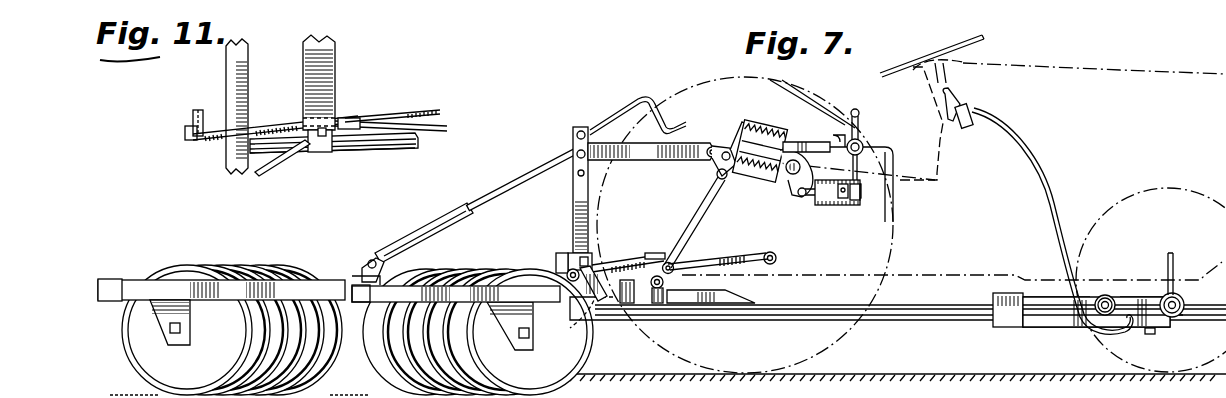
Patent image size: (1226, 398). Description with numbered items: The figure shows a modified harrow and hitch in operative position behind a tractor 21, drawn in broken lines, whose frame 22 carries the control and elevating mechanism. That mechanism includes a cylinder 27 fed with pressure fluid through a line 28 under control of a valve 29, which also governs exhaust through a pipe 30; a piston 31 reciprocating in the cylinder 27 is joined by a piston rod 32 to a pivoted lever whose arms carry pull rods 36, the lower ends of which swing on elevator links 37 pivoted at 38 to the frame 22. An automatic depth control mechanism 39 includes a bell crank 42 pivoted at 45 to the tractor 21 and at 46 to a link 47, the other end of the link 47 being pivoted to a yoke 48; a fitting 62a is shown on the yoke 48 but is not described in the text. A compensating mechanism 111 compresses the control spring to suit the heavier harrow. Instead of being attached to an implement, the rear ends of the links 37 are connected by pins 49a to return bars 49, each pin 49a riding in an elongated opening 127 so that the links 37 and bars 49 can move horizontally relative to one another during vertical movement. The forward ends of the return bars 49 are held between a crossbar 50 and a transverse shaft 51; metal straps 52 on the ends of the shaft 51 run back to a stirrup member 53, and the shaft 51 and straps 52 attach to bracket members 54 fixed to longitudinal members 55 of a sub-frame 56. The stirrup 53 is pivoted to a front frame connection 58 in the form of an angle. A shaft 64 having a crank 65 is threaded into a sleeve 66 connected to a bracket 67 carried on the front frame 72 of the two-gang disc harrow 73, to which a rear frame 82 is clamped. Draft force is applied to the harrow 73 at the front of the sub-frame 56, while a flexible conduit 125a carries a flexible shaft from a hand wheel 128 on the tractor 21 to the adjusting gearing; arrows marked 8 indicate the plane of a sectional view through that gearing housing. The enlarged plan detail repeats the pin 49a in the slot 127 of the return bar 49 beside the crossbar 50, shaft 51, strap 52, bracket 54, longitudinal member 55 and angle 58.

In FIG. 7, the section line 8- 8 is at (1010, 283).
In FIG. 7, the tractor 21 is at (1166, 62).
In FIG. 7, the frame 22 is at (930, 280).
In FIG. 7, the cylinder 27 is at (860, 198).
In FIG. 7, the line 28 is at (896, 186).
In FIG. 7, the valve 29 is at (866, 130).
In FIG. 7, the pipe 30 is at (836, 140).
In FIG. 7, the piston 31 is at (843, 203).
In FIG. 7, the piston rod 32 is at (803, 197).
In FIG. 11, the pull rod 36 is at (448, 128).
In FIG. 7, the pull rod 36 is at (696, 205).
In FIG. 11, the elevator link 37 is at (412, 110).
In FIG. 7, the elevator link 37 is at (722, 260).
In FIG. 7, the pivot 38 is at (776, 258).
In FIG. 7, the automatic depth control mechanism 39 is at (766, 188).
In FIG. 7, the bell crank 42 is at (722, 146).
In FIG. 7, the pivot 45 is at (728, 180).
In FIG. 7, the pivot 46 is at (722, 160).
In FIG. 7, the link 47 is at (640, 155).
In FIG. 7, the yoke 48 is at (565, 212).
In FIG. 11, the return bar 49 is at (268, 113).
In FIG. 7, the return bar 49 is at (620, 266).
In FIG. 11, the pin 49a is at (197, 110).
In FIG. 11, the crossbar 50 is at (327, 72).
In FIG. 7, the crossbar 50 is at (660, 253).
In FIG. 11, the transverse shaft 51 is at (322, 152).
In FIG. 7, the transverse shaft 51 is at (660, 304).
In FIG. 11, the metal strap 52 is at (272, 165).
In FIG. 7, the metal strap 52 is at (630, 304).
In FIG. 7, the stirrup member 53 is at (600, 303).
In FIG. 11, the bracket member 54 is at (420, 140).
In FIG. 7, the bracket member 54 is at (708, 304).
In FIG. 11, the longitudinal member 55 is at (398, 156).
In FIG. 7, the longitudinal member 55 is at (812, 300).
In FIG. 7, the sub-frame 56 is at (897, 330).
In FIG. 11, the front frame connection 58 is at (226, 152).
In FIG. 7, the pivot bolt 62a is at (574, 160).
In FIG. 7, the shaft 64 is at (548, 155).
In FIG. 7, the crank 65 is at (650, 100).
In FIG. 7, the sleeve 66 is at (432, 236).
In FIG. 7, the bracket 67 is at (378, 256).
In FIG. 7, the front frame 72 is at (509, 273).
In FIG. 7, the two-gang disc harrow 73 is at (341, 262).
In FIG. 7, the rear frame 82 is at (186, 271).
In FIG. 7, the compensating mechanism 111 is at (770, 118).
In FIG. 7, the flexible conduit 125a is at (1042, 178).
In FIG. 11, the elongated opening 127 is at (185, 129).
In FIG. 7, the elongated opening 127 is at (572, 318).
In FIG. 7, the hand wheel 128 is at (970, 98).